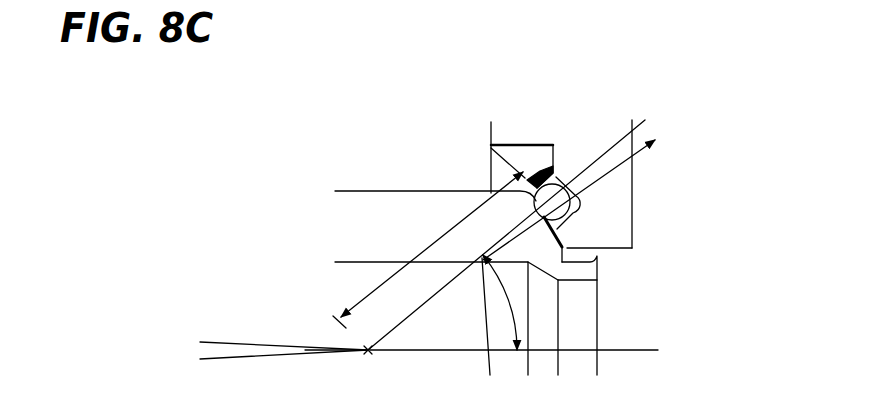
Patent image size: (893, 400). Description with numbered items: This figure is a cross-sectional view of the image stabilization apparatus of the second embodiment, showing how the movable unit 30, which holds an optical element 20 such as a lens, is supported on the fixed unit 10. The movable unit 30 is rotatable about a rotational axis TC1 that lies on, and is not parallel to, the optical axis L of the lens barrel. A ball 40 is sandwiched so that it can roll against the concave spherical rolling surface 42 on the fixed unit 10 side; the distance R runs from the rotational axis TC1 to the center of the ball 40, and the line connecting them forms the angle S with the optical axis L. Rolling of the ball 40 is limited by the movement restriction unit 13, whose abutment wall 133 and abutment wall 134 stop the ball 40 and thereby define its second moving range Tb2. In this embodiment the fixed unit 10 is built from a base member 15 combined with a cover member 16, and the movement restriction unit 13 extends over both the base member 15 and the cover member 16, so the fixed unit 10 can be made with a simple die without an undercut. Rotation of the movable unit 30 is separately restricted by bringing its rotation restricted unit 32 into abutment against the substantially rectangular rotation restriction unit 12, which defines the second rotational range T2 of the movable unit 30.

The fixed unit 10 is at (607, 55).
The cover member 16 is at (541, 145).
The base member 15 is at (570, 120).
The movement restriction unit 13 is at (490, 143).
The abutment wall 134 is at (535, 178).
The movable unit 30 is at (358, 200).
The ball 40 is at (536, 208).
The rolling surface 42 is at (579, 197).
The abutment wall 133 is at (563, 229).
The rotation restriction unit 12 is at (598, 250).
The rotation restricted unit 32 is at (597, 256).
The optical element 20 is at (350, 268).
The second moving range Tb2 is at (606, 80).
The distance R is at (428, 250).
The angle S is at (504, 302).
The optical axis L is at (658, 351).
The second rotational range T2 is at (205, 387).
The rotational axis TC1 is at (368, 352).